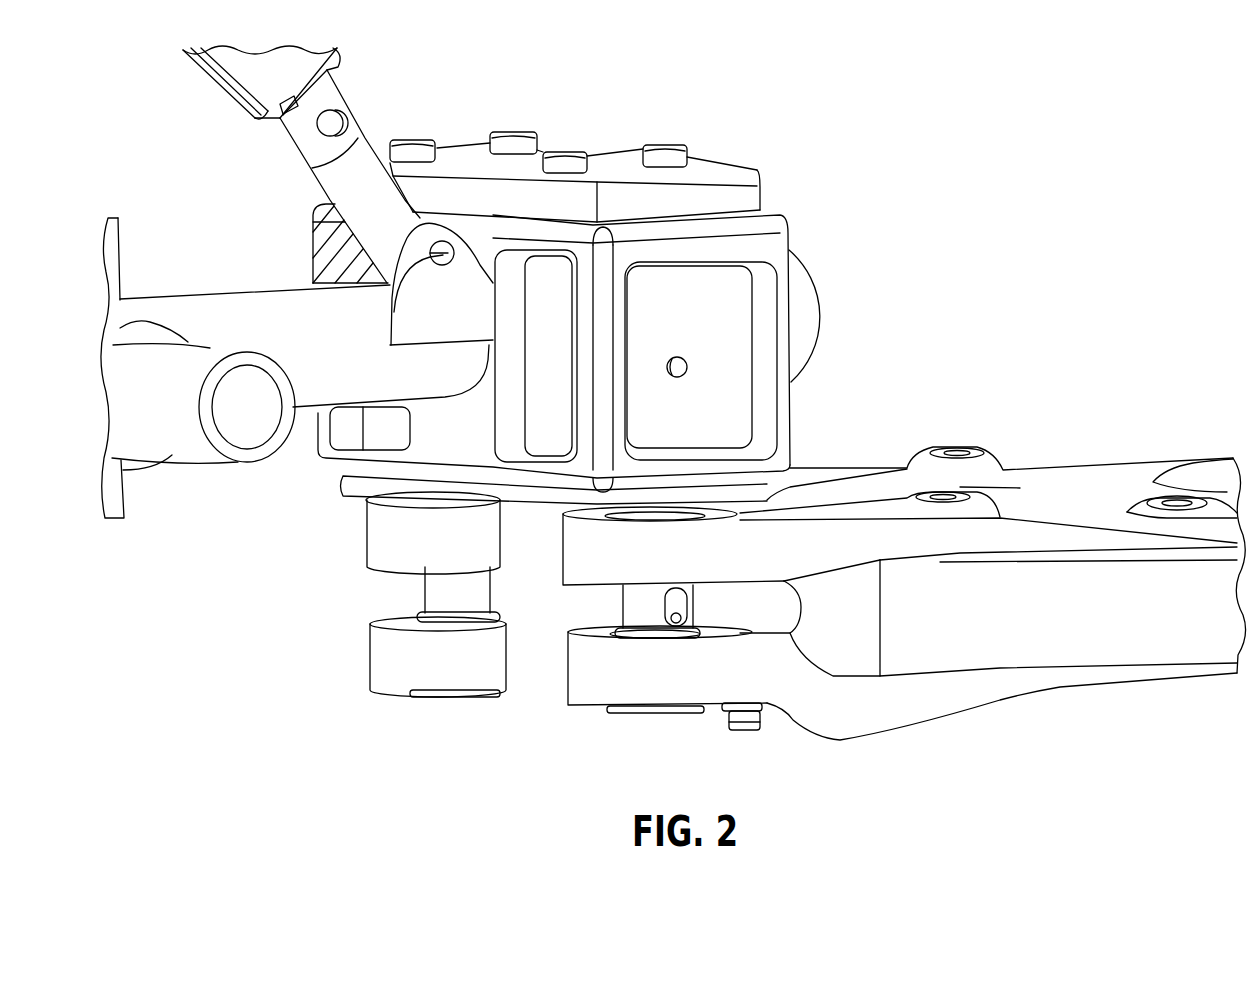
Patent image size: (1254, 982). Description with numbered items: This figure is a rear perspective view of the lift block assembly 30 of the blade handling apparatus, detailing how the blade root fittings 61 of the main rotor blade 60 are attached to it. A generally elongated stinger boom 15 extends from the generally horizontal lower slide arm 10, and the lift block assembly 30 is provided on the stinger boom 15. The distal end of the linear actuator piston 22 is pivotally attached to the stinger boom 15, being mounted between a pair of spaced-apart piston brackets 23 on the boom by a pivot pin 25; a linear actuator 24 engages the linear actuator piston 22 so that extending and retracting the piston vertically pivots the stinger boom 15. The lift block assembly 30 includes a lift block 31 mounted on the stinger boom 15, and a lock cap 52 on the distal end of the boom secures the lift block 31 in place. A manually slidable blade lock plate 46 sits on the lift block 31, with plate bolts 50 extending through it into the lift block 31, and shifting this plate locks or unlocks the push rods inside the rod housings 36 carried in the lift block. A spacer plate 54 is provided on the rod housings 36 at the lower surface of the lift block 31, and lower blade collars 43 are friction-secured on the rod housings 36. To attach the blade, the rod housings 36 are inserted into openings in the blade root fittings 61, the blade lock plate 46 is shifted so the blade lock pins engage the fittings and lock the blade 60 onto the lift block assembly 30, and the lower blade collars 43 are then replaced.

The lower slide arm 10 is at (237, 457).
The stinger boom 15 is at (223, 313).
The linear actuator piston 22 is at (325, 182).
The piston brackets 23 is at (343, 250).
The linear actuator 24 is at (257, 78).
The pivot pin 25 is at (391, 310).
The lift block assembly 30 is at (780, 185).
The lift block 31 is at (793, 220).
The rod housing 36 is at (430, 590).
The lower blade collars 43 is at (442, 700).
The blade lock plate 46 is at (725, 172).
The plate bolts 50 is at (423, 137).
The lock cap 52 is at (808, 308).
The spacer plate 54 is at (345, 490).
The main rotor blade 60 is at (1084, 460).
The blade root fittings 61 is at (367, 530).